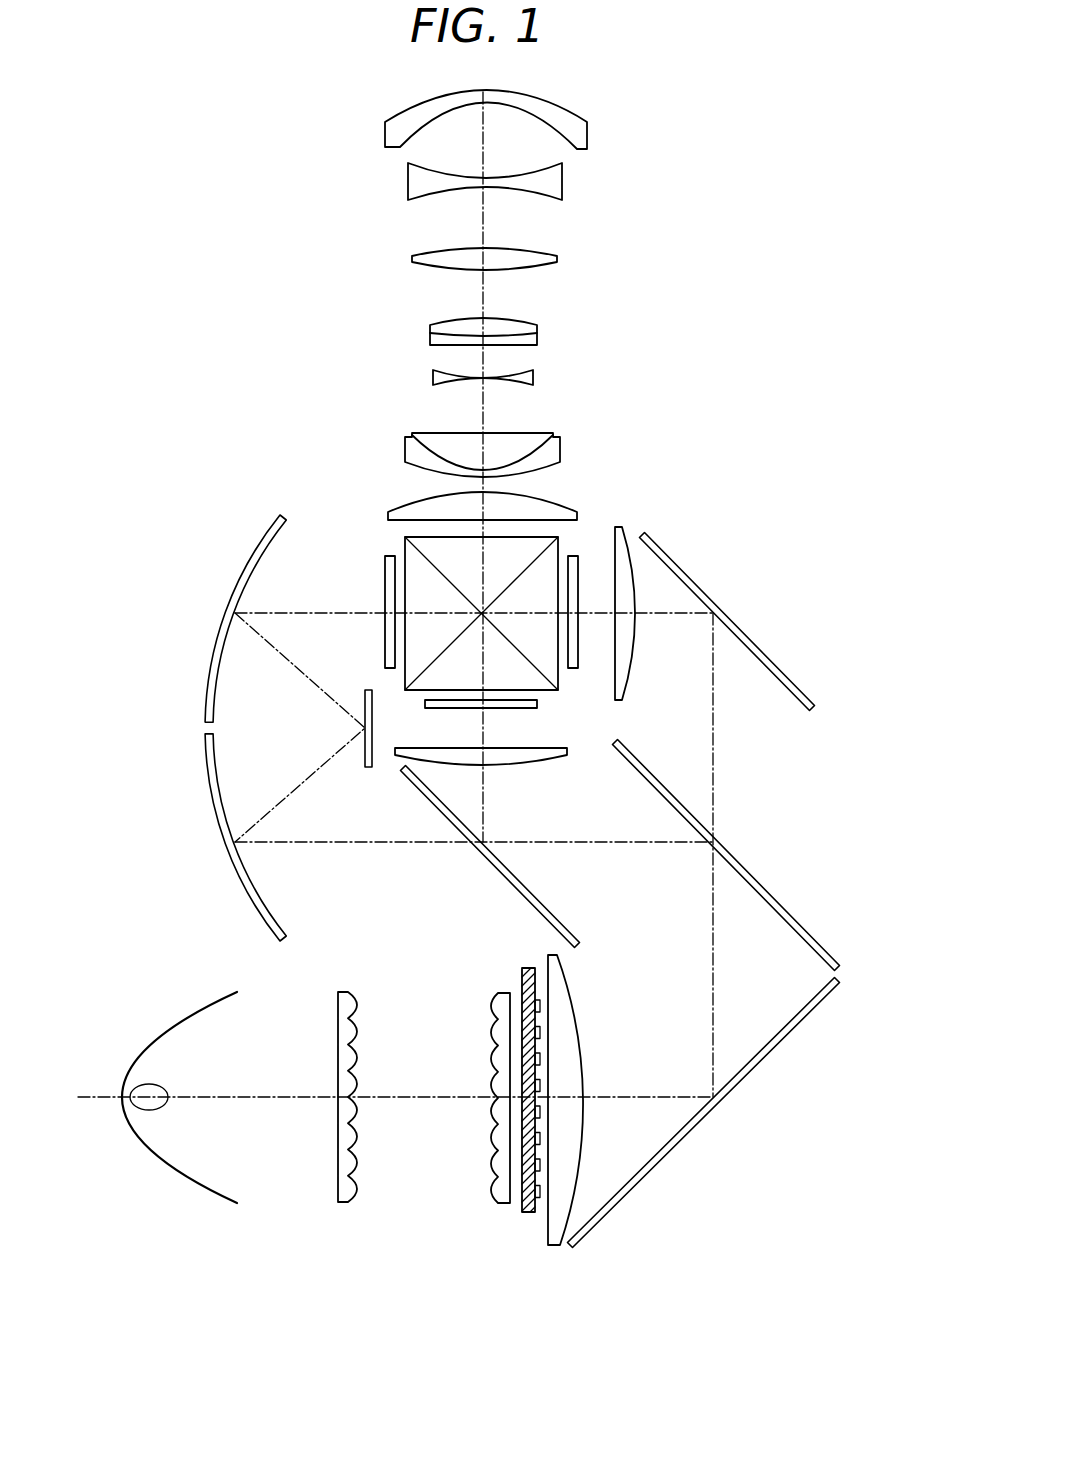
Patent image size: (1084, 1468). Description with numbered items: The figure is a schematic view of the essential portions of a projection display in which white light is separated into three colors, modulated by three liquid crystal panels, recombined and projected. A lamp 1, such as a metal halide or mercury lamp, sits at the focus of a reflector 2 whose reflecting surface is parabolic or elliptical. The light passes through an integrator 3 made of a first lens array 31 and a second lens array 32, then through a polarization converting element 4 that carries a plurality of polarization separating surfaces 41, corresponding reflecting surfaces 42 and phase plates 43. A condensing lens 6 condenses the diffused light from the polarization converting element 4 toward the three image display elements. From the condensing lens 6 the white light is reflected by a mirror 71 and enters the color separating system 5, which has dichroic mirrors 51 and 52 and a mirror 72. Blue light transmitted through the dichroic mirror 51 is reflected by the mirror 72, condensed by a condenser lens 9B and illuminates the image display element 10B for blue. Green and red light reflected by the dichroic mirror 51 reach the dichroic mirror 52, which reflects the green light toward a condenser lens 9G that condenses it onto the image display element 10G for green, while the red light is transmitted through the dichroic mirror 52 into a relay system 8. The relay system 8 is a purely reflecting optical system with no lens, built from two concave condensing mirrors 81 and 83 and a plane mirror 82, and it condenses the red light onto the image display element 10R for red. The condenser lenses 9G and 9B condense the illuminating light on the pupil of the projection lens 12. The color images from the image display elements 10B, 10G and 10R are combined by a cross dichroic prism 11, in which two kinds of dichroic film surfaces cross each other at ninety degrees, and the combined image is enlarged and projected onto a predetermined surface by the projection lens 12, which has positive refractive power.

The lamp 1 is at (138, 1112).
The reflector 2 is at (185, 1180).
The integrator 3 is at (424, 1143).
The first lens array 31 is at (345, 1210).
The second lens array 32 is at (479, 1126).
The polarization converting element 4 is at (563, 1137).
The polarization separating surfaces 41 is at (532, 1215).
The reflecting surfaces 42 is at (540, 1178).
The phase plates 43 is at (524, 1214).
The color separating system 5 is at (671, 855).
The dichroic mirror 51 is at (795, 921).
The dichroic mirror 52 is at (532, 905).
The condensing lens 6 is at (560, 1247).
The mirror 71 is at (748, 1072).
The mirror 72 is at (777, 667).
The relay system 8 is at (232, 738).
The condensing mirror 81 is at (248, 900).
The plane mirror 82 is at (365, 770).
The condensing mirror 83 is at (238, 578).
The condenser lens 9B is at (631, 680).
The condenser lens 9G is at (535, 766).
The image display element for red 10R is at (388, 574).
The image display element for green 10G is at (462, 710).
The image display element for blue 10B is at (578, 560).
The cross dichroic prism 11 is at (558, 680).
The projection lens 12 is at (373, 95).